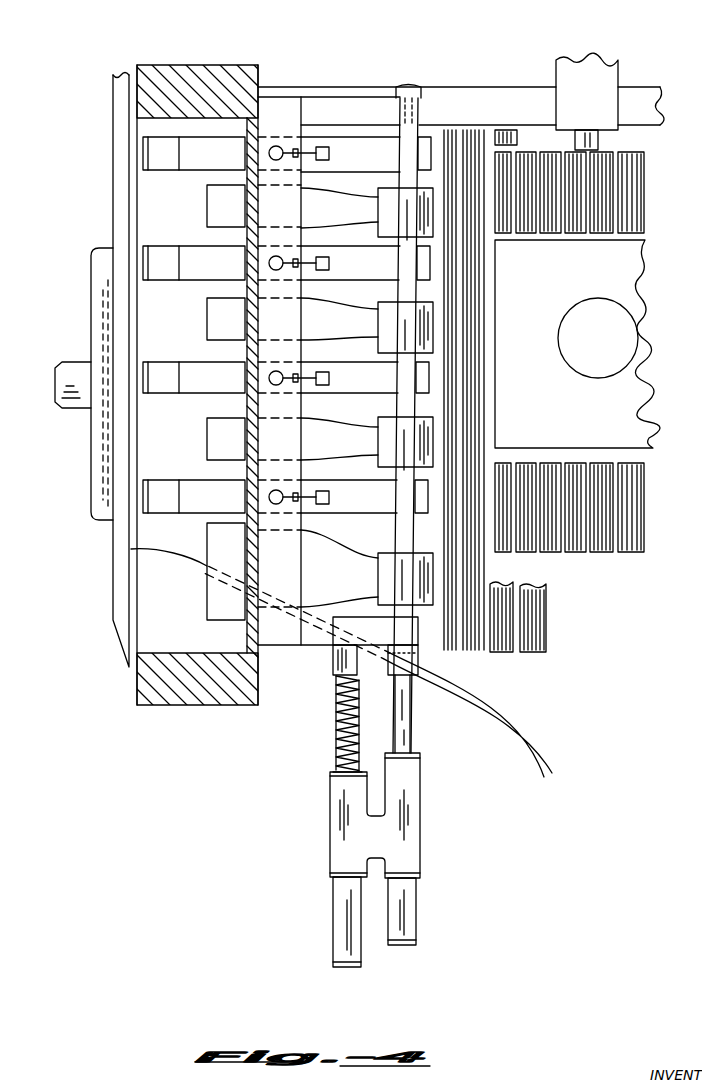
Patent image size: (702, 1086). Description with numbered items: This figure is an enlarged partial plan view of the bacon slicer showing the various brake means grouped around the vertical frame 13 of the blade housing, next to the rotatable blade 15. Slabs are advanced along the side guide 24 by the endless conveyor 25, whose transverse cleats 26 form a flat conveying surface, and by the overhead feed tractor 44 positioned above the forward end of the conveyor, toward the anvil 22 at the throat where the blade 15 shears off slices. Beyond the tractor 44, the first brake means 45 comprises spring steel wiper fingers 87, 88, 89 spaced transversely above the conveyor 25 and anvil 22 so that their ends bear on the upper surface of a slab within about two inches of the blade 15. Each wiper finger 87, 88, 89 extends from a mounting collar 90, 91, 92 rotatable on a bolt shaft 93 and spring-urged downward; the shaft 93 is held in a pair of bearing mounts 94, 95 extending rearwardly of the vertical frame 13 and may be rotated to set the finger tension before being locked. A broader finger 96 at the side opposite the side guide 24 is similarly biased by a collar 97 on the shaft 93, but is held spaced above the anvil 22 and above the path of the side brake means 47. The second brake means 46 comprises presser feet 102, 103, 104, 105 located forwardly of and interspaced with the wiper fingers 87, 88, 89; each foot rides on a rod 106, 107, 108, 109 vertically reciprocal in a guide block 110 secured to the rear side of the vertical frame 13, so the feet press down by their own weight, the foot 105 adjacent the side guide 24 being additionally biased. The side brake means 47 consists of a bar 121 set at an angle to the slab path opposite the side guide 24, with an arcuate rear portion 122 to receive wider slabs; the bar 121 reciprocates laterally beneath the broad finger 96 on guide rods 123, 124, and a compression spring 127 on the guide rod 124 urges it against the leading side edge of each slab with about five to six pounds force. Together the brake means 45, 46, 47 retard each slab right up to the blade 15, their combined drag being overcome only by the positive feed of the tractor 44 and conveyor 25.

The vertical frame 13 is at (250, 662).
The rotatable blade 15 is at (112, 610).
The anvil 22 is at (148, 640).
The side guide 24 is at (652, 128).
The endless conveyor 25 is at (548, 645).
The transverse cleats 26 is at (462, 357).
The overhead feed tractor 44 is at (628, 553).
The first brake means 45 is at (430, 142).
The second brake means 46 is at (284, 142).
The side brake means 47 is at (413, 686).
The wiper finger 87 is at (207, 438).
The wiper finger 88 is at (207, 318).
The wiper finger 89 is at (207, 207).
The mounting collar 90 is at (378, 466).
The mounting collar 91 is at (378, 355).
The mounting collar 92 is at (375, 237).
The bolt shaft 93 is at (397, 291).
The bearing mount 94 is at (418, 636).
The bearing mount 95 is at (366, 174).
The broad finger 96 is at (207, 612).
The collar 97 is at (380, 553).
The presser foot 102 is at (188, 514).
The presser foot 103 is at (192, 395).
The presser foot 104 is at (192, 282).
The presser foot 105 is at (191, 172).
The rod 106 is at (258, 495).
The rod 107 is at (246, 378).
The rod 108 is at (258, 262).
The rod 109 is at (282, 101).
The guide block 110 is at (255, 352).
The bar 121 is at (133, 551).
The arcuate rear portion 122 is at (540, 758).
The guide rod 123 is at (398, 722).
The guide rod 124 is at (333, 678).
The compression spring 127 is at (360, 690).